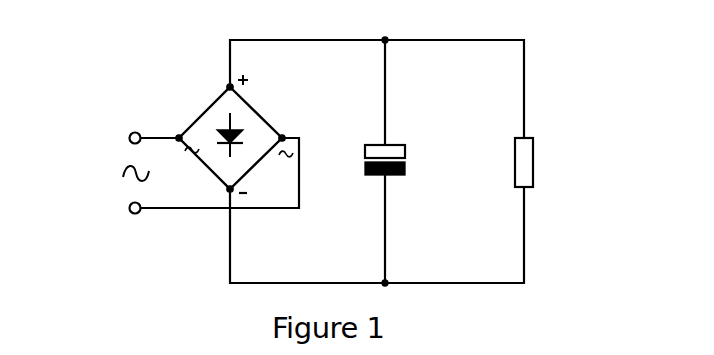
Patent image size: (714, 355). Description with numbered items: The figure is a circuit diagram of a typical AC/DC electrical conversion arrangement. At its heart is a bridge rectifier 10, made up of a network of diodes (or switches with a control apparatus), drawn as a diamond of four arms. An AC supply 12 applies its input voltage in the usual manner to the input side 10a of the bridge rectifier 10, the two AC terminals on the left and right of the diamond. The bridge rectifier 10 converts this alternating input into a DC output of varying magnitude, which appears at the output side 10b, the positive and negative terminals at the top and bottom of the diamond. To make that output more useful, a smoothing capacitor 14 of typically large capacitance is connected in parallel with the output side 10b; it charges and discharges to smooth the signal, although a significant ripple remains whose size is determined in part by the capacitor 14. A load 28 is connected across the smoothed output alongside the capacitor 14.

The bridge rectifier 10 is at (215, 127).
The input side of the bridge rectifier 10a is at (176, 135).
The output side of the bridge rectifier 10b is at (228, 86).
The AC supply 12 is at (118, 172).
The smoothing capacitor 14 is at (395, 178).
The load 28 is at (538, 163).